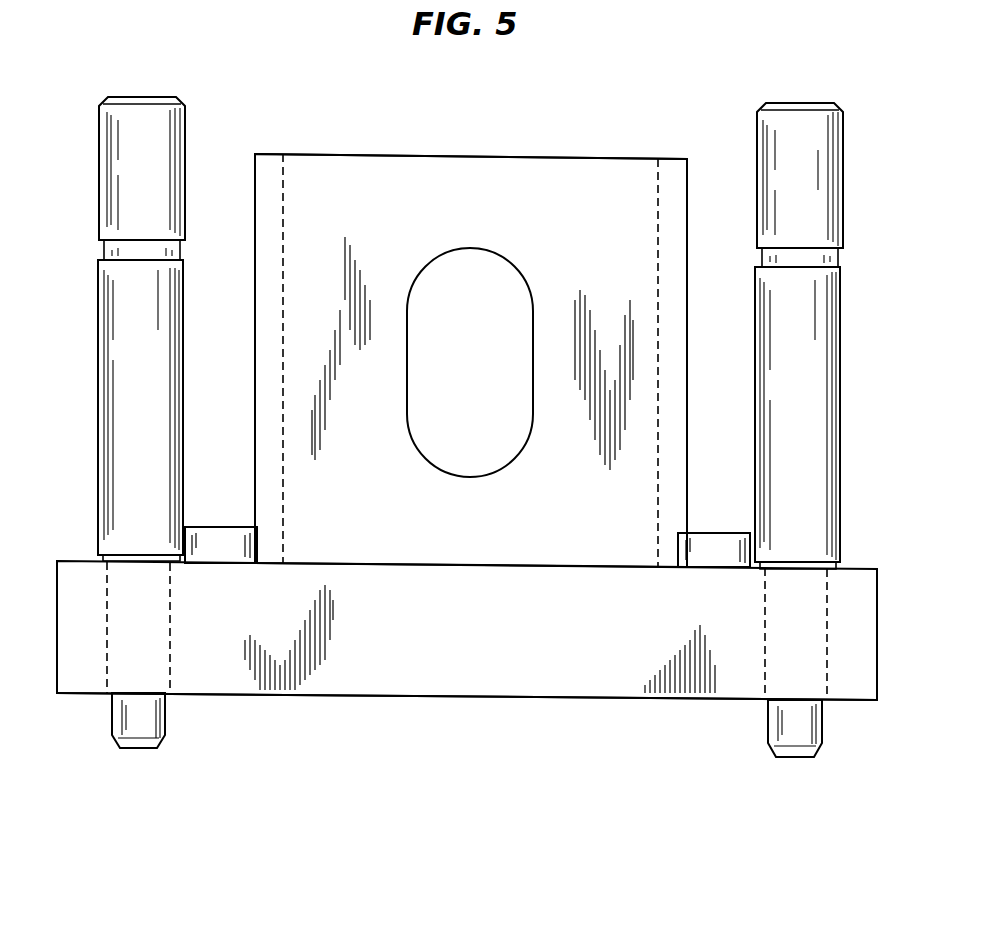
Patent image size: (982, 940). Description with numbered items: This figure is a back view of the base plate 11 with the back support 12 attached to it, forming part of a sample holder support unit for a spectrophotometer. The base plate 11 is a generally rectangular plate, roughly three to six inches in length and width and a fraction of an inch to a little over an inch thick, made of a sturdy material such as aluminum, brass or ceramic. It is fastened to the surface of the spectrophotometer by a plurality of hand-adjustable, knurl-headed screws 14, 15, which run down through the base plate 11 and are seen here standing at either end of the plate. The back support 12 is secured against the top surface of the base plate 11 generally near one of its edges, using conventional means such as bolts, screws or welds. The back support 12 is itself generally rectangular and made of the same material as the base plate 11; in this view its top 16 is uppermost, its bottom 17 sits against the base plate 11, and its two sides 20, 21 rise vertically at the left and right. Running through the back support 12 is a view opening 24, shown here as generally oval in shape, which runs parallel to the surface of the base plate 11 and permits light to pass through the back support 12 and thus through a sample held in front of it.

The base plate 11 is at (843, 612).
The back support 12 is at (688, 172).
The knurl-headed screw 14 is at (112, 163).
The knurl-headed screw 15 is at (823, 173).
The top 16 is at (522, 157).
The bottom 17 is at (470, 567).
The side 20 is at (252, 355).
The side 21 is at (688, 380).
The view opening 24 is at (485, 272).